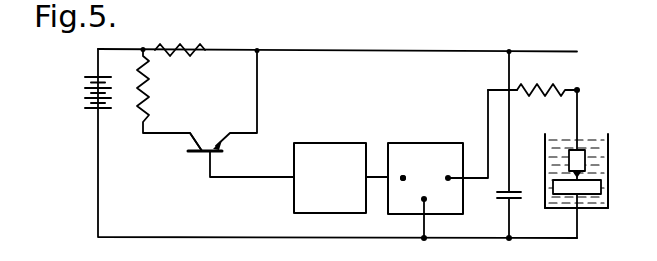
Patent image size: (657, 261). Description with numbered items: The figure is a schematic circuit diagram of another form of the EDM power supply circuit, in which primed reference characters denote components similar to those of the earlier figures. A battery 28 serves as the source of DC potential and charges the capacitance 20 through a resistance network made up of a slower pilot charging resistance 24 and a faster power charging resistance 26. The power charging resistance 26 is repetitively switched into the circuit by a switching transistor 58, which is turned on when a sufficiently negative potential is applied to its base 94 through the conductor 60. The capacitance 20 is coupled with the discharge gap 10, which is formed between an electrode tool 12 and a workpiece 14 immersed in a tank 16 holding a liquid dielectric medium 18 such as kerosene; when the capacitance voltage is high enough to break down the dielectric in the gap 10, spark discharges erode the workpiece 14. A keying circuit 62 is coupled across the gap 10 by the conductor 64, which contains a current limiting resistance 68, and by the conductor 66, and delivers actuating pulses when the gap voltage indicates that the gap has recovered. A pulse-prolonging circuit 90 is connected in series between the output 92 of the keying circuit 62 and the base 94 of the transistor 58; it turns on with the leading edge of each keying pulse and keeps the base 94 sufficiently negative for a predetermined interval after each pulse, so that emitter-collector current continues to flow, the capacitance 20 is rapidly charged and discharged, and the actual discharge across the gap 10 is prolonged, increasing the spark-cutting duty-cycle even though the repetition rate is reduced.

The battery 28 is at (85, 96).
The power charging resistance 26 is at (152, 92).
The pilot charging resistance 24 is at (178, 62).
The switching transistor 58 is at (207, 147).
The base of the switching transistor 94 is at (201, 153).
The conductor 60 is at (229, 178).
The pulse-prolonging circuit 90 is at (326, 150).
The output of the keying circuit 92 is at (403, 174).
The keying circuit 62 is at (417, 143).
The conductor 66 is at (423, 224).
The conductor 64 is at (488, 96).
The current limiting resistance 68 is at (546, 67).
The capacitance 20 is at (523, 198).
The liquid dielectric medium 18 is at (592, 130).
The tank 16 is at (592, 211).
The electrode tool 12 is at (586, 174).
The discharge gap 10 is at (586, 151).
The workpiece 14 is at (600, 187).